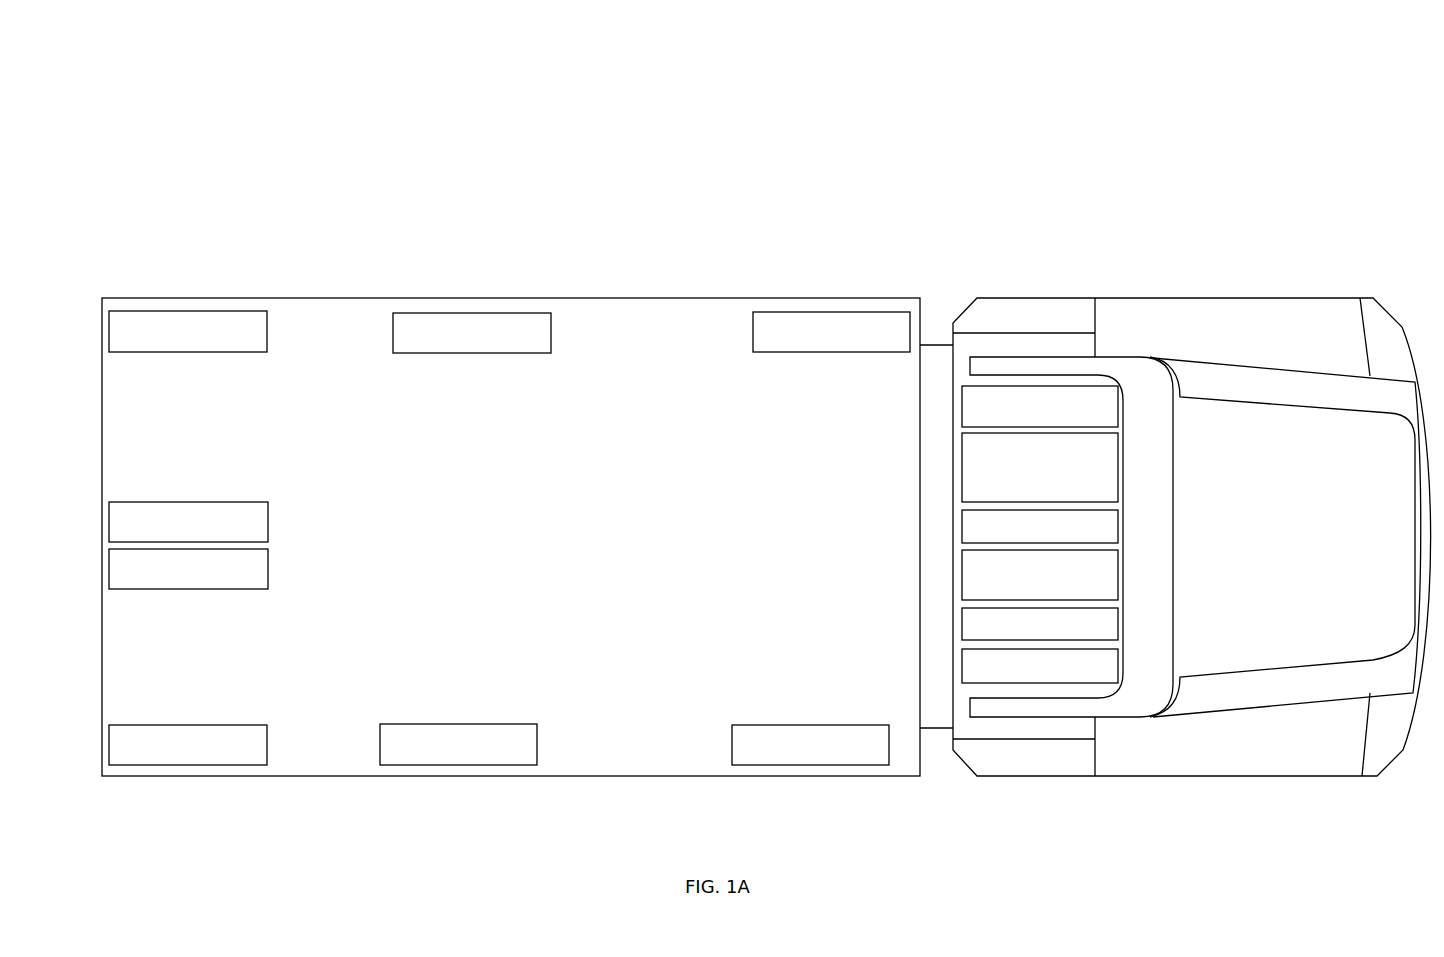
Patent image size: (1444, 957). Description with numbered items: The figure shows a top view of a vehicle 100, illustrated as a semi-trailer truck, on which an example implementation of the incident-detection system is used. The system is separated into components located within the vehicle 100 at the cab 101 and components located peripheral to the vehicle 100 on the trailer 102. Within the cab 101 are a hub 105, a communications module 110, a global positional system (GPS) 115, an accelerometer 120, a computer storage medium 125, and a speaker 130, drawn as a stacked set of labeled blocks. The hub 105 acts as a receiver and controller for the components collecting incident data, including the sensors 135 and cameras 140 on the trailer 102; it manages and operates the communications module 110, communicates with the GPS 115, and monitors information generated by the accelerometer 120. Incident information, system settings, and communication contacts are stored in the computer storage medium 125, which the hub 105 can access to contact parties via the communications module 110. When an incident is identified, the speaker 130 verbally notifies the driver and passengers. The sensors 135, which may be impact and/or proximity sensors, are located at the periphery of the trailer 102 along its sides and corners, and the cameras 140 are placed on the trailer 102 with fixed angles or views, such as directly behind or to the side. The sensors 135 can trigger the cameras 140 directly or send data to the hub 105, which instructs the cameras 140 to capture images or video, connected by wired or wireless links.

The vehicle 100 is at (645, 94).
The cab 101 is at (1155, 298).
The trailer 102 is at (627, 298).
The hub 105 is at (1038, 418).
The communications module 110 is at (1070, 493).
The global positional system (GPS) 115 is at (1043, 540).
The accelerometer 120 is at (1000, 599).
The computer storage medium 125 is at (1070, 637).
The speaker 130 is at (1073, 679).
The sensors 135 is at (212, 343).
The cameras 140 is at (503, 343).